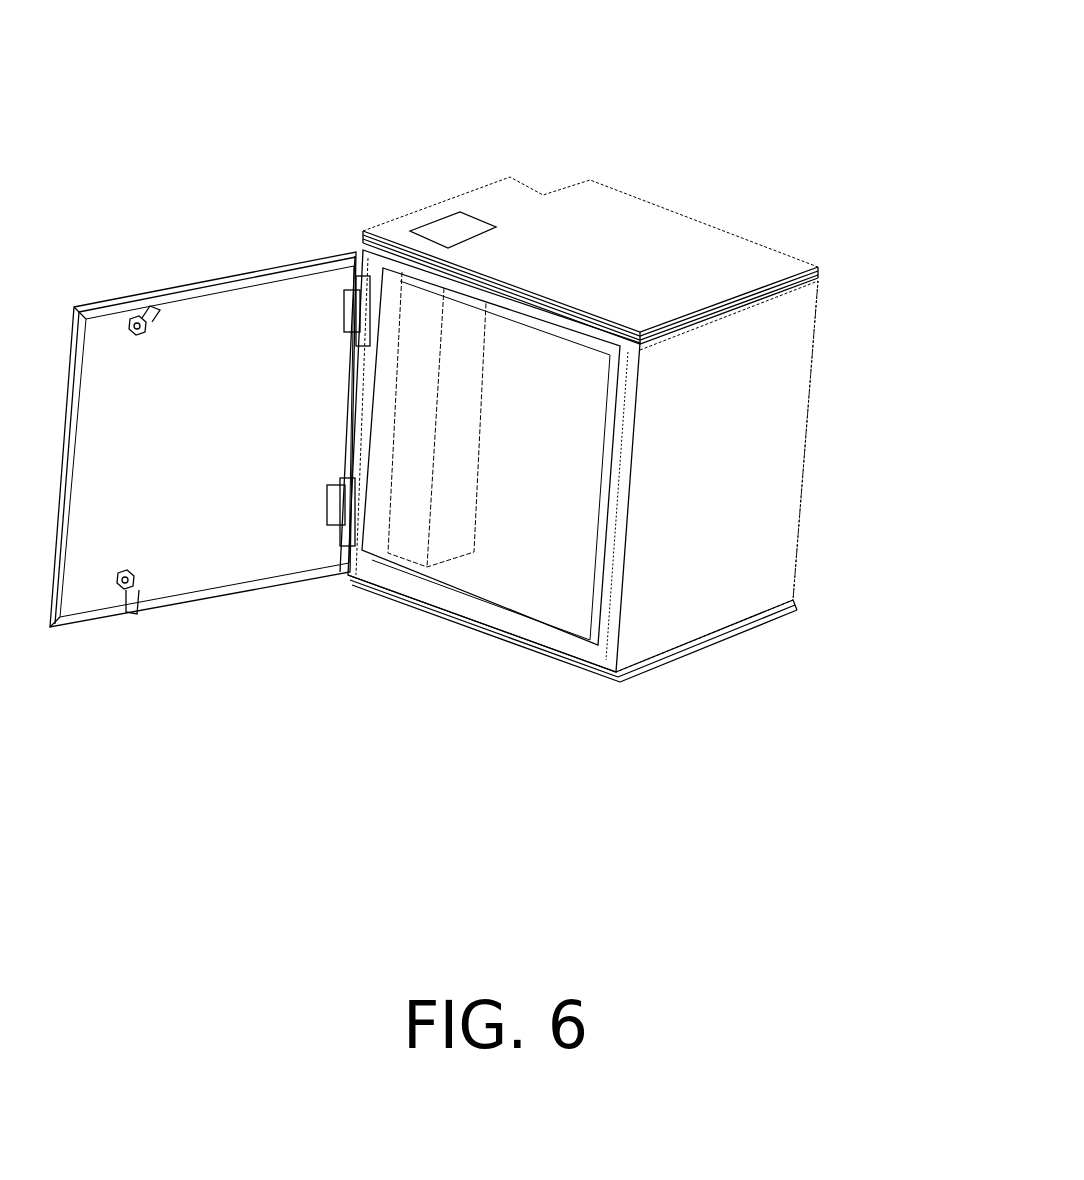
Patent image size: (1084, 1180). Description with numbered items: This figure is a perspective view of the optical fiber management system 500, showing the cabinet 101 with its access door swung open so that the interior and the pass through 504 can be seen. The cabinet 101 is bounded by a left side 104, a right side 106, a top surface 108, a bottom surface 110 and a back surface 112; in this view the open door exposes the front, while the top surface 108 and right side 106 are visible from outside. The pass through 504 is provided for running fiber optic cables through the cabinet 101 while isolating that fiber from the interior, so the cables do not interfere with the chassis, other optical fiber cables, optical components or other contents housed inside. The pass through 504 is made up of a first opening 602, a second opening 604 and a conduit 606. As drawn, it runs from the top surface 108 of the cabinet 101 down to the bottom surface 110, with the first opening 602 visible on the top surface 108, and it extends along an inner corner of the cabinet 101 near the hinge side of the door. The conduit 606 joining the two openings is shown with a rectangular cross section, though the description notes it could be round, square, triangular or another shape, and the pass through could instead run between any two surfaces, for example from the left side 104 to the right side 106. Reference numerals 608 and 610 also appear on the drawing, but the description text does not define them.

The optical fiber management system 500 is at (848, 62).
The cabinet 101 is at (818, 274).
The left side 104 is at (352, 242).
The right side 106 is at (758, 495).
The top surface 108 is at (660, 240).
The bottom surface 110 is at (580, 665).
The back surface 112 is at (806, 365).
The pass through 504 is at (393, 432).
The first opening 602 is at (430, 228).
The second opening 604 is at (388, 597).
The conduit 606 is at (400, 320).
The bottom flange 608 is at (412, 620).
The interior compartment 610 is at (555, 518).